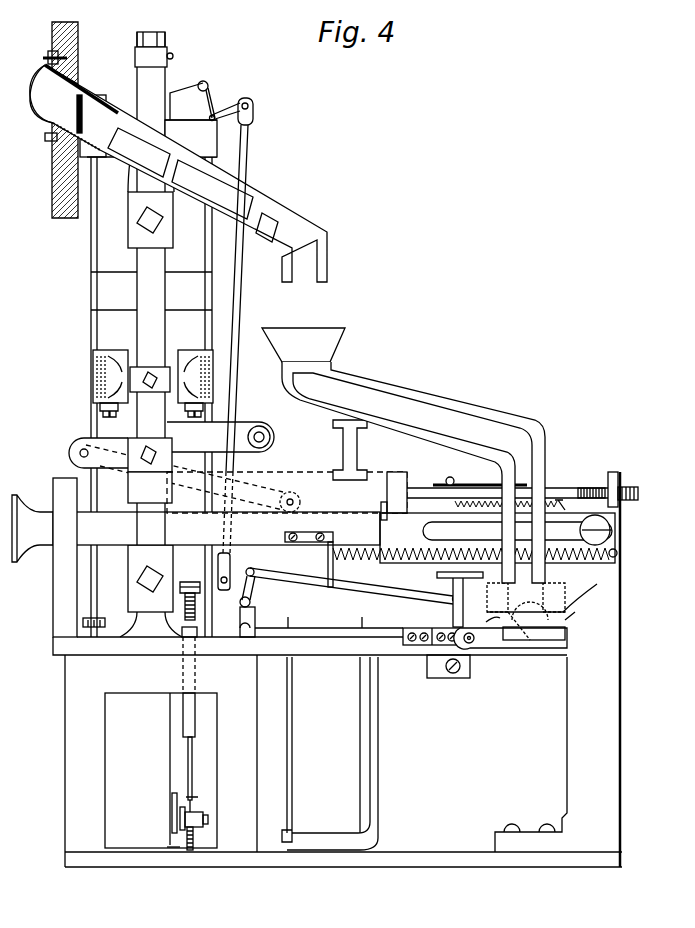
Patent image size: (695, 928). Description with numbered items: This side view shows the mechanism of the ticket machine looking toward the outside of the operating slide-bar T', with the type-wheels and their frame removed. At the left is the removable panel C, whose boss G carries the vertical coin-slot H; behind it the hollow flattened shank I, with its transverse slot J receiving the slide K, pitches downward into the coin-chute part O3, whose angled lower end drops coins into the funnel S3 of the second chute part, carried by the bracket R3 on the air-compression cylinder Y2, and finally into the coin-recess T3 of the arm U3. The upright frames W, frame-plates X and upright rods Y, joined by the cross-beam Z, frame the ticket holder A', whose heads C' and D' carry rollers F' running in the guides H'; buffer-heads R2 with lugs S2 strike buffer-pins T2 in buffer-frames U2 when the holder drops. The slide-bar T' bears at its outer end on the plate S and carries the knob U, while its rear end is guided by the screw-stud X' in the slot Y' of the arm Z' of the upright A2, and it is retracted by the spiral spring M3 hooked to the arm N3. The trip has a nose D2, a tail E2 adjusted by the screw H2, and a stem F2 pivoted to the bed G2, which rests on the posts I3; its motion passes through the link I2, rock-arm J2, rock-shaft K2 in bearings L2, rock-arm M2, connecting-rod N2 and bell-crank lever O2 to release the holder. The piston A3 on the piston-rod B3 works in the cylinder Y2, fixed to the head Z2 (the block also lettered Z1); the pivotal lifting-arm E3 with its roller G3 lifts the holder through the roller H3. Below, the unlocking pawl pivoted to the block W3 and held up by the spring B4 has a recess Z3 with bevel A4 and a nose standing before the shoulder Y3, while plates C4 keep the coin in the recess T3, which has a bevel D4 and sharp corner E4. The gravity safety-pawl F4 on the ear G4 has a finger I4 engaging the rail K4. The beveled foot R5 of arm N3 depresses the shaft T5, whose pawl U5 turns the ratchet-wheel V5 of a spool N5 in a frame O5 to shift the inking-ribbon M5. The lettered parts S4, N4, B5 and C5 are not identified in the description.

The removable front door or panel C is at (57, 120).
The ticket holder or tube A' is at (168, 322).
The cross-beam Z is at (168, 57).
The buffer-heads R2 is at (151, 284).
The lugs S2 is at (151, 317).
The guides H' is at (150, 402).
The head C' is at (191, 138).
The upright stem F2 is at (191, 100).
The bell-crank lever O2 is at (203, 83).
The buffer-pins T2 is at (195, 350).
The buffer-frames U2 is at (153, 377).
The air-compression cylinder Y2 is at (96, 383).
The transverse slot J is at (72, 110).
The pivotal lifting-arm E3 is at (220, 460).
The anti-friction roller H3 is at (275, 438).
The bearings L2 is at (169, 537).
The slide block Z1 is at (150, 455).
The head Z2 is at (150, 487).
The beam T' is at (216, 528).
The operating-knob U is at (32, 528).
The heavy plate or frame S is at (65, 557).
The piston A3 is at (386, 490).
The anti-friction roller G3 is at (298, 498).
The head D' is at (104, 618).
The bolt S4 is at (192, 583).
The spools N5 is at (197, 628).
The shaft T5 is at (196, 717).
The horizontal frame-plate X is at (310, 646).
The upright frames W is at (161, 761).
The upright rods Y is at (343, 669).
The inking-ribbon M5 is at (161, 770).
The plate N4 is at (172, 810).
The spring-actuated pawl U5 is at (205, 818).
The ratchet-wheel V5 is at (190, 852).
The frames O5 is at (170, 852).
The pipe B5 is at (294, 752).
The arm N3 is at (328, 565).
The spiral spring M3 is at (475, 563).
The rock-arm J2 is at (352, 586).
The long link I2 is at (398, 582).
The beveled foot R5 is at (320, 603).
The rock-shaft K2 is at (251, 602).
The rock-arm M2 is at (226, 594).
The screw H2 is at (469, 602).
The nose D2 is at (450, 577).
The gravity safety-pawl F4 is at (472, 610).
The sharp corner E4 is at (485, 622).
The bed G2 is at (329, 636).
The block W3 is at (433, 628).
The shoulder Y3 is at (580, 615).
The posts I3 is at (570, 634).
The upright A2 is at (600, 626).
The spring B4 is at (470, 668).
The small plates C4 is at (526, 597).
The recess Z3 is at (542, 648).
The bevel A4 is at (522, 645).
The bevel D4 is at (588, 597).
The tail E2 is at (480, 573).
The arm U3 is at (525, 572).
The horizontal arm Z' is at (497, 538).
The horizontal slot Y' is at (517, 531).
The screw-stud X' is at (614, 530).
The piston-rod B3 is at (473, 477).
The rail K4 is at (462, 496).
The nut C5 is at (619, 480).
The ear G4 is at (568, 500).
The finger I4 is at (493, 504).
The coin-chute part O3 is at (272, 196).
The hollow flattened shank I is at (80, 86).
The vertical coin-slot H is at (41, 94).
The raised center or boss G is at (30, 92).
The slide K is at (84, 114).
The roller F' is at (46, 96).
The long connecting-rod N2 is at (238, 302).
The funnel S3 is at (303, 345).
The bracket R3 is at (358, 449).
The coin-recess T3 is at (418, 405).